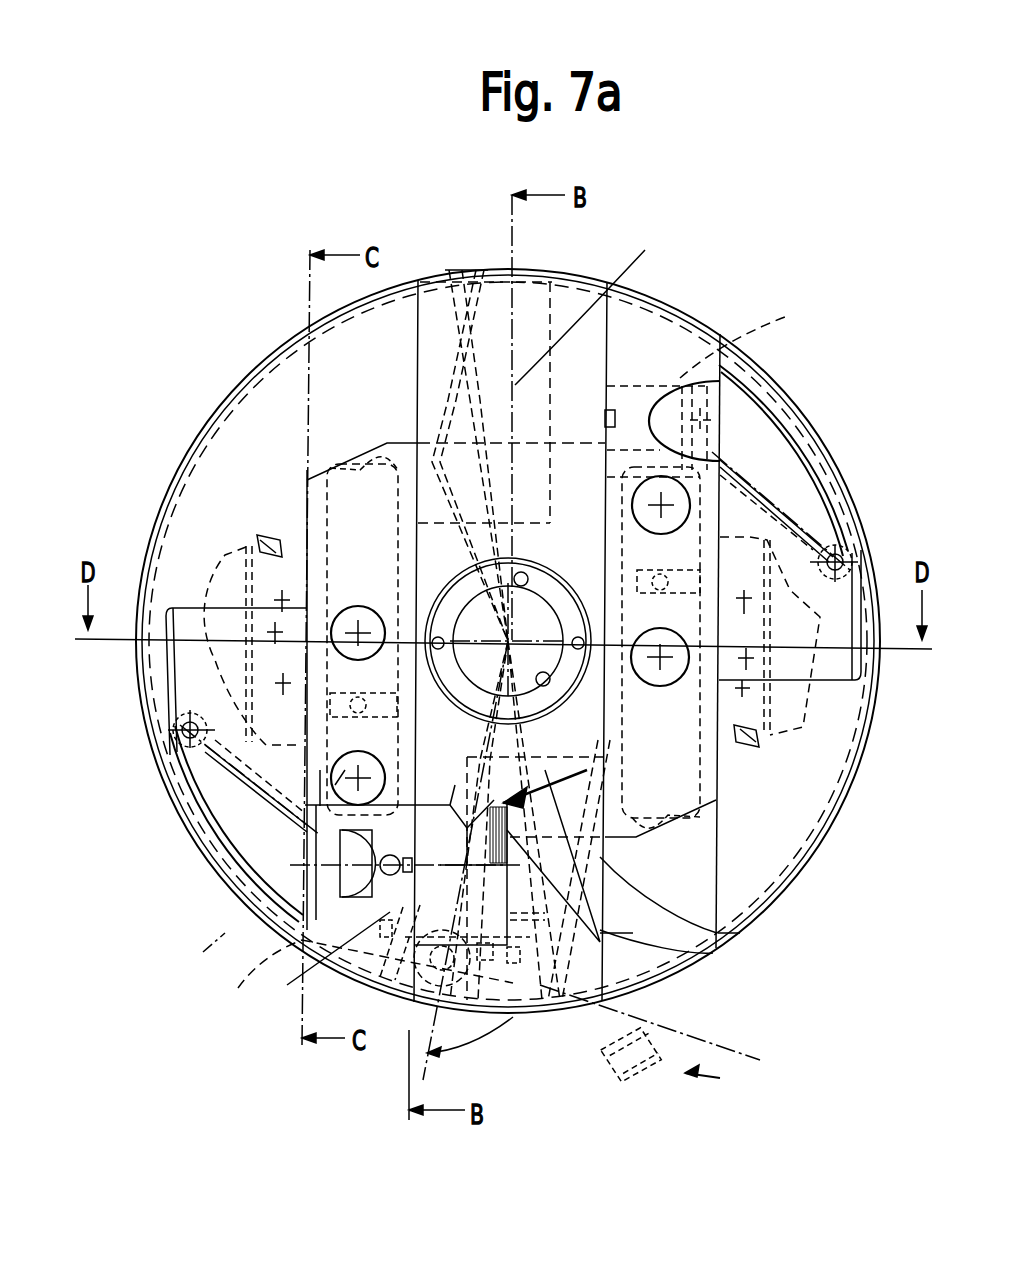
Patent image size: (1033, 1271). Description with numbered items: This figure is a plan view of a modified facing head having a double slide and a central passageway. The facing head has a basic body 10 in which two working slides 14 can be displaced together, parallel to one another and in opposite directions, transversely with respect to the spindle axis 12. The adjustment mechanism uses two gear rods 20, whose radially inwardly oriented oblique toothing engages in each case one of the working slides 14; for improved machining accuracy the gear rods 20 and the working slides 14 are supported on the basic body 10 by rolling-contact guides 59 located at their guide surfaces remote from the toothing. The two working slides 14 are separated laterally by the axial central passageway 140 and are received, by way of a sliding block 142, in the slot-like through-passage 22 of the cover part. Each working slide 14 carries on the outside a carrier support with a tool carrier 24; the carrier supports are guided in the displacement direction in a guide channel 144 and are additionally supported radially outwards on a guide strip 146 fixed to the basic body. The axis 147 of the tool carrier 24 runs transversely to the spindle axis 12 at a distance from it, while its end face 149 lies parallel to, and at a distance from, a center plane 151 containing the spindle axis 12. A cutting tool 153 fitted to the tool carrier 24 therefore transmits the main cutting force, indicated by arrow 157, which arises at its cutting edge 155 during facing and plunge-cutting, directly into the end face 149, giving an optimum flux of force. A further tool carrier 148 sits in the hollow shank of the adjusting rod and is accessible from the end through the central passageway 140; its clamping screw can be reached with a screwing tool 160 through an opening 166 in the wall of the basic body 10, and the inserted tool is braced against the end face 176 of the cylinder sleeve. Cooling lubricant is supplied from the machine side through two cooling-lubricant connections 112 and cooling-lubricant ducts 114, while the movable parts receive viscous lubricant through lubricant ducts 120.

The basic body 10 is at (820, 900).
The spindle axis 12 is at (506, 638).
The working slide 14 is at (335, 480).
The gear rods 20 is at (338, 573).
The through-passage 22 is at (386, 443).
The tool carrier 24 is at (521, 652).
The rolling-contact guides 59 is at (225, 555).
The cooling-lubricant connections 112 is at (850, 555).
The cooling-lubricant ducts 114 is at (795, 522).
The lubricant ducts 120 is at (452, 285).
The axial central passageway 140 is at (547, 587).
The sliding block 142 is at (205, 752).
The guide channel 144 is at (416, 336).
The guide strip 146 is at (752, 452).
The axis of the tool carrier 147 is at (300, 872).
The tool carrier 148 is at (527, 520).
The end face 149 is at (423, 820).
The center plane 151 is at (594, 305).
The cutting tool 153 is at (437, 887).
The cutting edge 155 is at (617, 983).
The main cutting force 157 is at (727, 933).
The screwing tool 160 is at (667, 1037).
The opening 166 is at (470, 1055).
The end face of the cylinder sleeve 176 is at (468, 697).